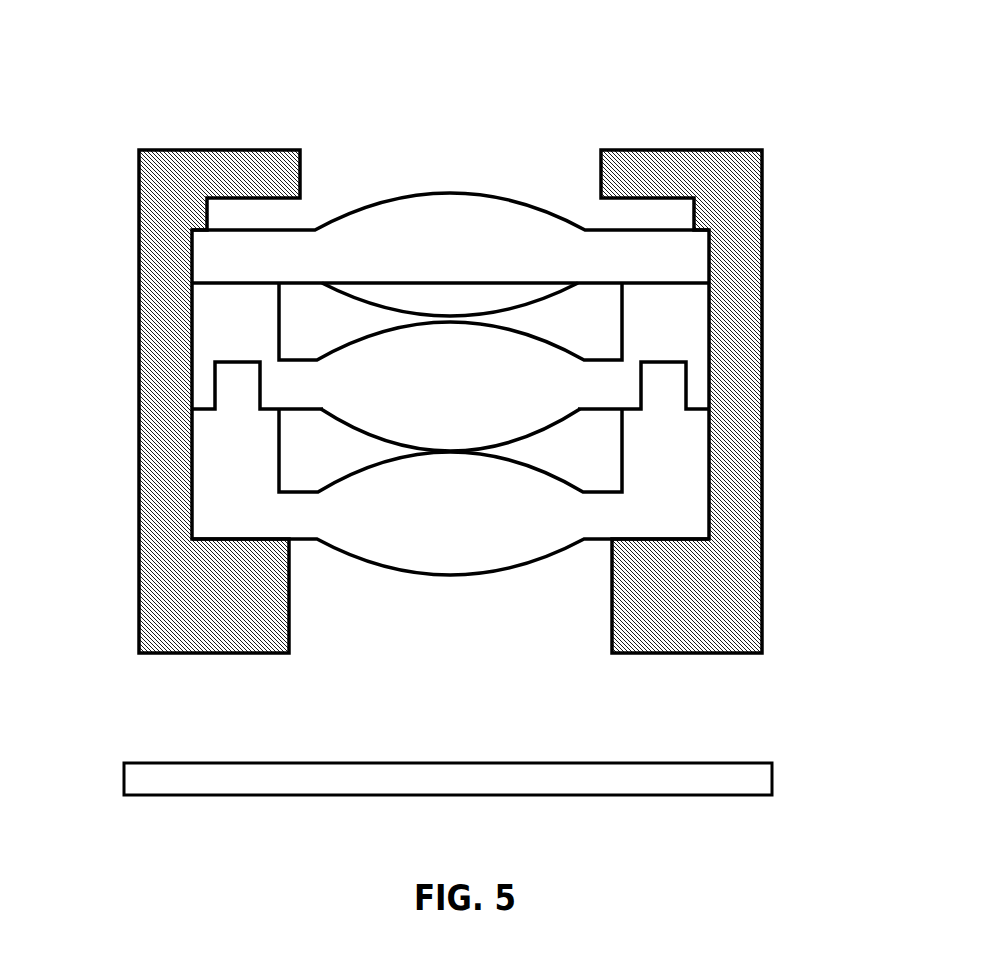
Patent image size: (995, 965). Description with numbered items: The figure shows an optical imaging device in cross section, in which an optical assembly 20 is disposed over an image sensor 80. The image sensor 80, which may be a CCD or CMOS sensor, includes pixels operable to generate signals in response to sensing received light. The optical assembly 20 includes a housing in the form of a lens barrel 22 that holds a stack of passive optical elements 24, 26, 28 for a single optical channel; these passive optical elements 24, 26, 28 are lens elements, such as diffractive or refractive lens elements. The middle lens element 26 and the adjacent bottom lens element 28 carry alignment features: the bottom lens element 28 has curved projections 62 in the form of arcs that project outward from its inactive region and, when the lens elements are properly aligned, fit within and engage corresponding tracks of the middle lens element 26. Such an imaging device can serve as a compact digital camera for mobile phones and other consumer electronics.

The optical assembly 20 is at (461, 343).
The lens barrel 22 is at (147, 170).
The passive optical element 24 is at (488, 208).
The middle lens element 26 is at (530, 367).
The bottom lens element 28 is at (475, 555).
The projection 62 is at (225, 383).
The image sensor 80 is at (635, 763).